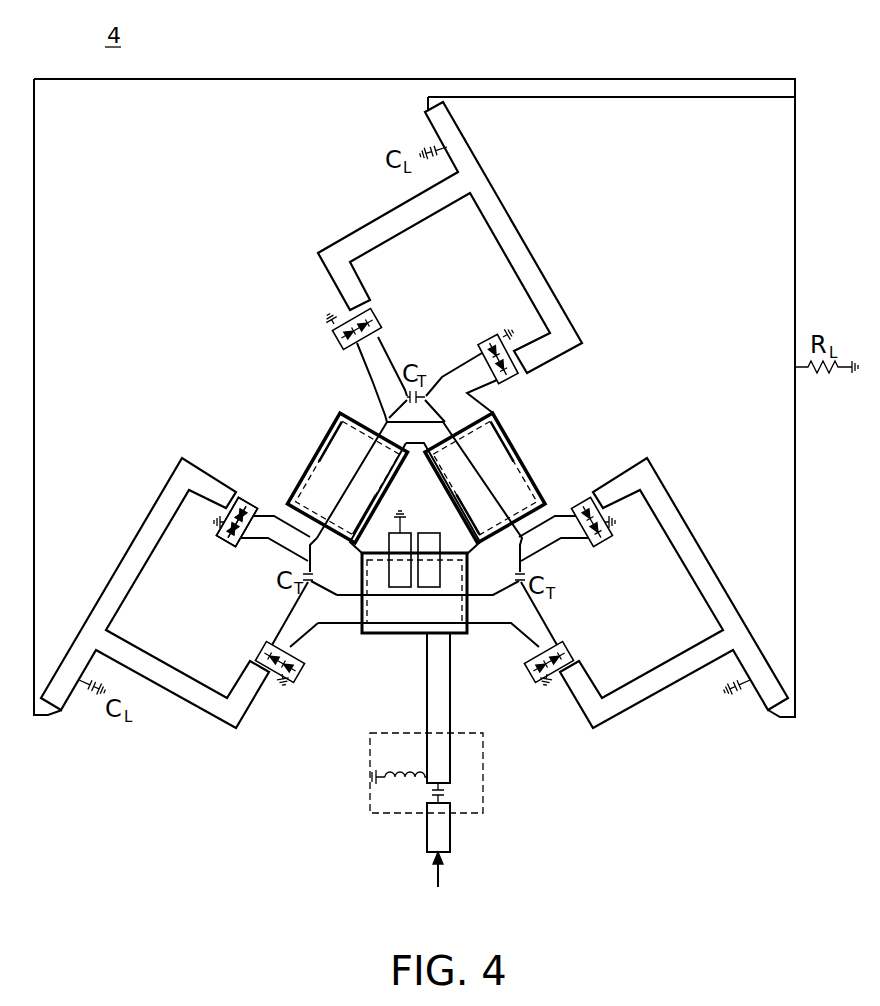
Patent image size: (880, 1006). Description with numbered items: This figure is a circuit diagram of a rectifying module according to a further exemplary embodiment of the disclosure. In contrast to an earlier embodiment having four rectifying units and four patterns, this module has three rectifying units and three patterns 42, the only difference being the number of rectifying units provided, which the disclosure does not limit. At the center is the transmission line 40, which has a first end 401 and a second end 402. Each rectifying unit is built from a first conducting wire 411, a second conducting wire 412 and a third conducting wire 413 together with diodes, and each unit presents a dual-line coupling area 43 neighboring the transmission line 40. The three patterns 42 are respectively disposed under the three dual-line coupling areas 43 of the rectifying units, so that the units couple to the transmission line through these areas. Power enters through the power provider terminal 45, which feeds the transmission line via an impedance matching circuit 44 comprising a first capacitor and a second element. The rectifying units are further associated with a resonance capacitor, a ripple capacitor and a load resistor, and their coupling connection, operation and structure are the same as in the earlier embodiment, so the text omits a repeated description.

The transmission line 40 is at (348, 568).
The first end 401 is at (428, 543).
The second end 402 is at (395, 540).
The first conducting wire 411 is at (557, 545).
The second conducting wire 412 is at (690, 545).
The third conducting wire 413 is at (493, 630).
The pattern 42 is at (312, 475).
The dual-line coupling area 43 is at (315, 450).
The impedance matching circuit 44 is at (483, 785).
The power provider terminal 45 is at (432, 835).